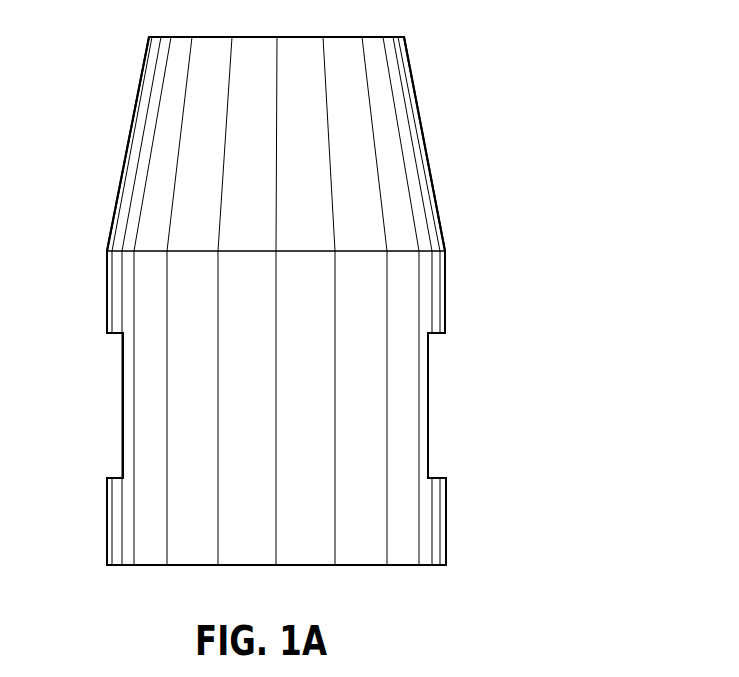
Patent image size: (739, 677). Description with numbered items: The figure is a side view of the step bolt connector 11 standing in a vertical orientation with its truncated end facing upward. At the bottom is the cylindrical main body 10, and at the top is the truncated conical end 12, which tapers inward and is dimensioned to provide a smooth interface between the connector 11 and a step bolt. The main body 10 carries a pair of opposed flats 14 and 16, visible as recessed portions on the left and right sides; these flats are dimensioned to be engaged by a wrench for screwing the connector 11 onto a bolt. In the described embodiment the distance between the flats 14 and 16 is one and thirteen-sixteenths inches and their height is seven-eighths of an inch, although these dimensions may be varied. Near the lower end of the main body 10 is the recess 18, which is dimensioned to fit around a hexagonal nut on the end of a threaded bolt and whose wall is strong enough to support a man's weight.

The cylindrical main body 10 is at (423, 286).
The step bolt connector 11 is at (370, 301).
The truncated conical end 12 is at (404, 136).
The flat 14 is at (428, 452).
The flat 16 is at (122, 402).
The recess 18 is at (446, 516).